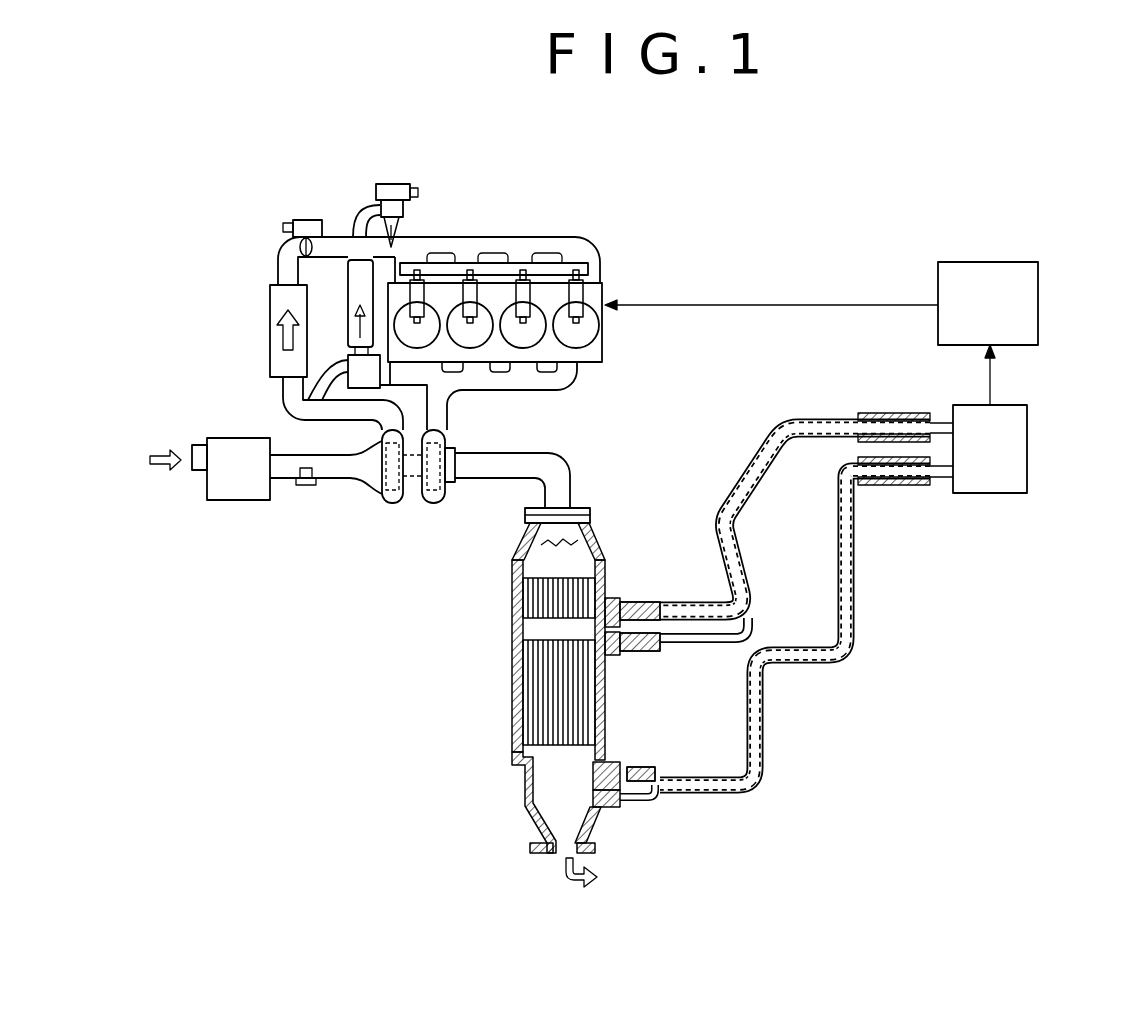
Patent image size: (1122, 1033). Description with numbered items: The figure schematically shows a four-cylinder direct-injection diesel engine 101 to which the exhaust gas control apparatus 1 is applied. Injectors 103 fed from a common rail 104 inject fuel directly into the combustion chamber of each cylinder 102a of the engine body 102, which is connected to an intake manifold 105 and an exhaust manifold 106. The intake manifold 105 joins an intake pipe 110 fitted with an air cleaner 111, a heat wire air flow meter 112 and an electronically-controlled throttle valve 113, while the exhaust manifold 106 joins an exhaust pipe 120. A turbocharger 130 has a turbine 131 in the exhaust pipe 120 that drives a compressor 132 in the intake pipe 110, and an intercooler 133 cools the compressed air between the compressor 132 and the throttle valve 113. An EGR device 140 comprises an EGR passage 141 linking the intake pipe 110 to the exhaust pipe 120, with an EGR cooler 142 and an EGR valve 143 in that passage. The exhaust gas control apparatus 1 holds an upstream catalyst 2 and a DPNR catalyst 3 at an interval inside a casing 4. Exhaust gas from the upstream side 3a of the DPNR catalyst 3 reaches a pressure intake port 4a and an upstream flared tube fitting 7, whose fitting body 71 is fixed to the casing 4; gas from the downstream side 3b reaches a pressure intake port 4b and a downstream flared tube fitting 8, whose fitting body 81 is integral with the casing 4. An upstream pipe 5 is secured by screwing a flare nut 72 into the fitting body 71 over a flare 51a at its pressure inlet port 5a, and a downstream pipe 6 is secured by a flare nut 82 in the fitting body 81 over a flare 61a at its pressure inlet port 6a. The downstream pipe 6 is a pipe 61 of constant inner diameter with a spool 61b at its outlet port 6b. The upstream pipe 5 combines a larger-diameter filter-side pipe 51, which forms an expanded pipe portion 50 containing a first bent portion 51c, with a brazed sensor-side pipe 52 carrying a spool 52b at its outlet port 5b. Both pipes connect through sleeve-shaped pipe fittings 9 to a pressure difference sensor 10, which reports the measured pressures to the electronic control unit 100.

The exhaust gas control apparatus 1 is at (572, 672).
The upstream catalyst 2 is at (528, 597).
The DPNR catalyst 3 is at (527, 708).
The upstream side of DPNR catalyst 3a is at (540, 628).
The downstream side of DPNR catalyst 3b is at (555, 770).
The casing 4 is at (587, 672).
The pressure intake port 4a is at (600, 655).
The pressure intake port 4b is at (598, 848).
The upstream pipe 5 is at (804, 517).
The pressure inlet port 5a is at (633, 655).
The outlet port 5b is at (892, 425).
The downstream pipe 6 is at (786, 661).
The pressure inlet port 6a is at (618, 808).
The outlet port 6b is at (890, 485).
The upstream flared tube fitting 7 is at (652, 567).
The downstream flared tube fitting 8 is at (661, 751).
The pipe fitting 9 is at (914, 413).
The pressure difference sensor 10 is at (1010, 405).
The expanded pipe portion 50 is at (718, 676).
The filter-side pipe 51 is at (742, 590).
The flare 51a is at (655, 650).
The first bent portion 51c is at (726, 605).
The sensor-side pipe 52 is at (770, 465).
The spool 52b is at (870, 413).
The pipe 61 is at (798, 647).
The flare 61a is at (652, 805).
The spool 61b is at (875, 485).
The fitting body 71 is at (612, 603).
The flare nut 72 is at (655, 606).
The fitting body 81 is at (622, 770).
The flare nut 82 is at (660, 775).
The electronic control unit 100 is at (1004, 262).
The diesel engine 101 is at (503, 289).
The engine body 102 is at (596, 292).
The cylinder 102a is at (442, 312).
The injector 103 is at (582, 316).
The common rail 104 is at (527, 268).
The intake manifold 105 is at (507, 240).
The exhaust manifold 106 is at (540, 388).
The intake pipe 110 is at (310, 355).
The air cleaner 111 is at (241, 490).
The heat wire air flow meter 112 is at (300, 486).
The electronically-controlled throttle valve 113 is at (300, 247).
The exhaust pipe 120 is at (463, 487).
The turbocharger 130 is at (399, 517).
The turbine 131 is at (437, 500).
The compressor 132 is at (387, 500).
The intercooler 133 is at (280, 305).
The EGR device 140 is at (348, 177).
The EGR passage 141 is at (296, 396).
The EGR cooler 142 is at (345, 300).
The EGR valve 143 is at (389, 184).